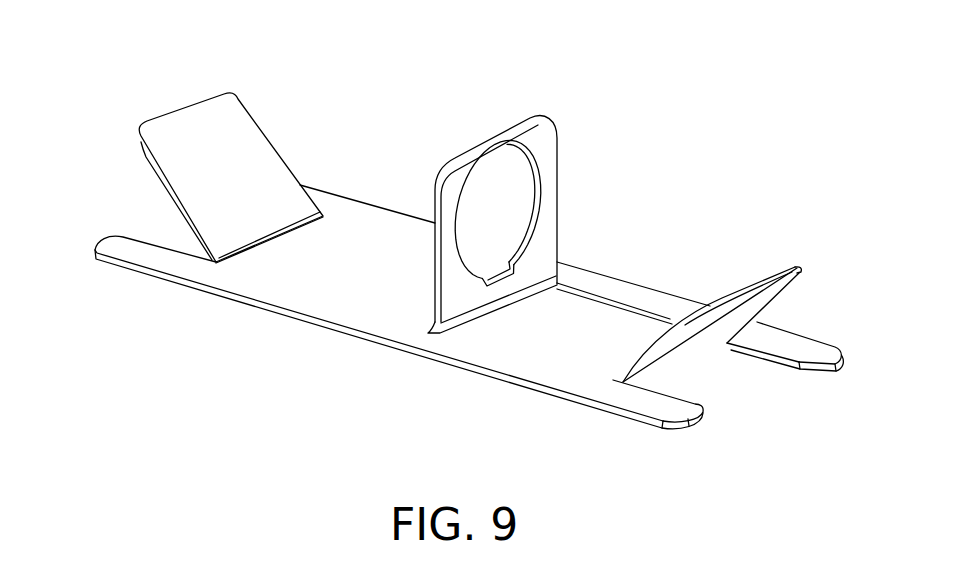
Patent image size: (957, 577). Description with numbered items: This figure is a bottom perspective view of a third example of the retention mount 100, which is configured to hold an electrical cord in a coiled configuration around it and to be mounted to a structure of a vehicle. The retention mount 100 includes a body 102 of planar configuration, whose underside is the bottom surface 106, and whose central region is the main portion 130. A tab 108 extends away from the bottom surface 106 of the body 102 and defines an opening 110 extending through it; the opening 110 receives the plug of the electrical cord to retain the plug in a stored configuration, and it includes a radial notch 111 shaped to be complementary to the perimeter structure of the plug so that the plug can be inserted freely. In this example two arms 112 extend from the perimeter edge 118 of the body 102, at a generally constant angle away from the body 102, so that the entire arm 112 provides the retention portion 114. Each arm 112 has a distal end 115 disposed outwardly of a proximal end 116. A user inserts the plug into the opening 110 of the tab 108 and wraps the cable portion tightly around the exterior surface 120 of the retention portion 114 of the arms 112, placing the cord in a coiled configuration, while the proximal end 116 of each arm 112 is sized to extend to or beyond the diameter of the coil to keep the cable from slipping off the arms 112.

The retention mount 100 is at (258, 54).
The body 102 is at (402, 289).
The bottom surface 106 is at (306, 305).
The tab 108 is at (534, 210).
The opening 110 is at (536, 172).
The radial notch 111 is at (515, 269).
The arm 112 is at (485, 225).
The retention portion 114 is at (227, 107).
The distal end 115 is at (273, 242).
The proximal end 116 is at (186, 110).
The perimeter edge 118 is at (797, 362).
The exterior surface 120 is at (750, 298).
The main portion 130 is at (361, 320).